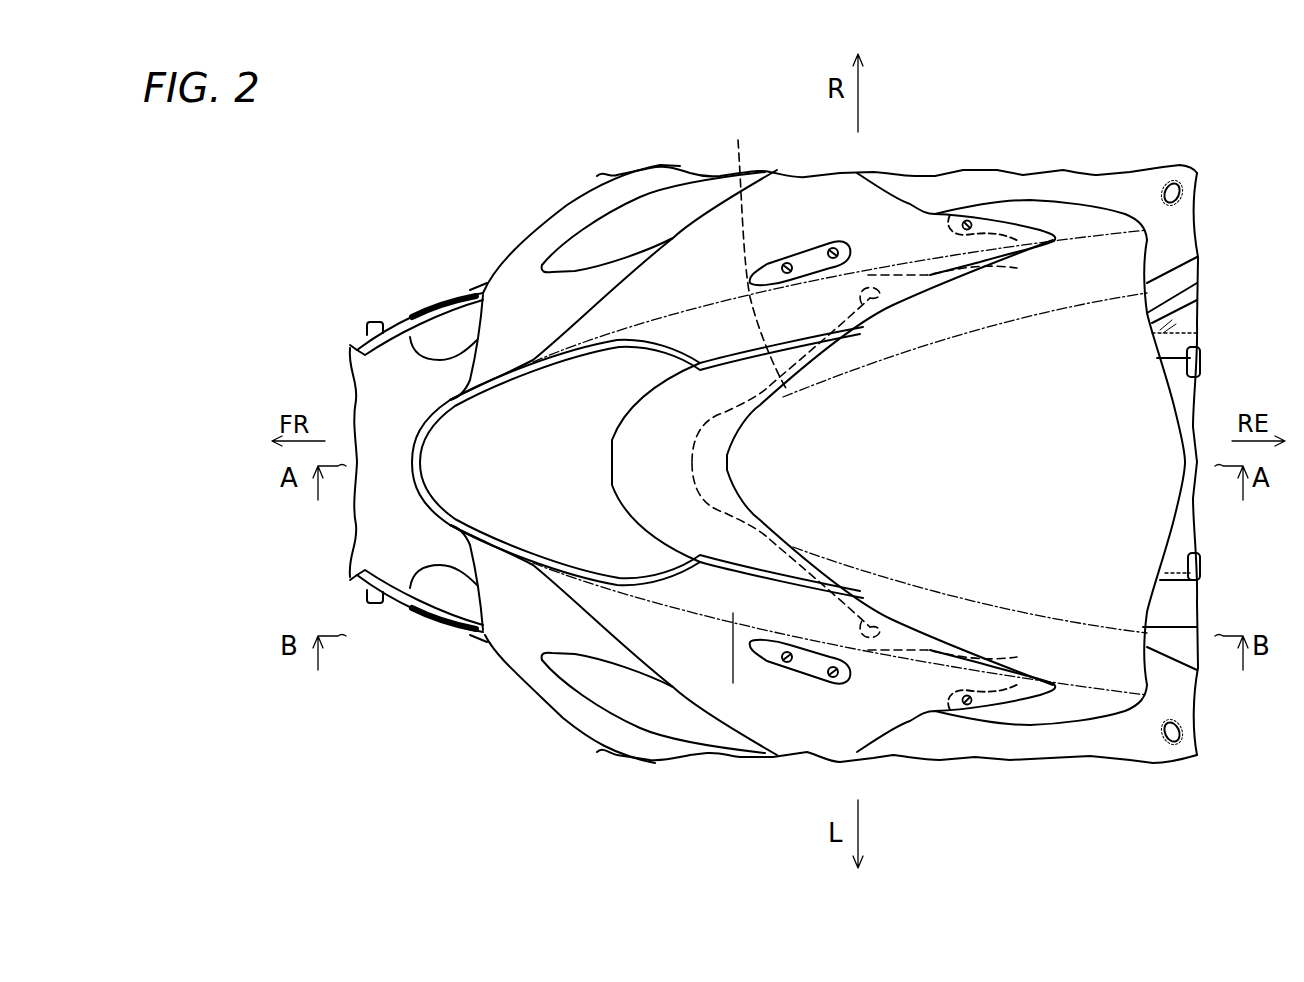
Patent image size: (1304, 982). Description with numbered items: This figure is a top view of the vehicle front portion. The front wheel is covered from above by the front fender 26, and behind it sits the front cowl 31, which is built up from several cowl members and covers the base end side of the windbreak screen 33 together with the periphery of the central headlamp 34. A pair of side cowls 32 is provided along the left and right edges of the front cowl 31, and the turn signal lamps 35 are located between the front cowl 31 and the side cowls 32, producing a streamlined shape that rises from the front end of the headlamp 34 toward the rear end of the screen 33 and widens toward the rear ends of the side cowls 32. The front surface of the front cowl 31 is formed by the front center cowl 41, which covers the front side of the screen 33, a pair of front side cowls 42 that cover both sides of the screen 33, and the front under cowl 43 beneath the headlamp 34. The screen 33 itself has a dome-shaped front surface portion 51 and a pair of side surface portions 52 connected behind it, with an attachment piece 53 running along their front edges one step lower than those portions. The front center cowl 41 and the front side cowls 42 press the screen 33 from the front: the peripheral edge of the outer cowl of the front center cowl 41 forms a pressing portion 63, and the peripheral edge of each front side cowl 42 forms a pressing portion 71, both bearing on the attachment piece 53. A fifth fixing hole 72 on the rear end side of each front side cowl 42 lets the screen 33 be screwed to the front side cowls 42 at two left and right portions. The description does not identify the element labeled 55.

The front fender 26 is at (363, 585).
The front cowl 31 is at (500, 265).
The side cowls 32 is at (965, 207).
The windbreak screen 33 is at (1160, 318).
The central headlamp 34 is at (493, 513).
The turn signal lamps 35 is at (680, 168).
The front center cowl 41 is at (742, 543).
The front side cowls 42 is at (793, 195).
The front under cowl 43 is at (514, 642).
The front surface portion 51 is at (1140, 565).
The side surface portions 52 is at (1065, 205).
The attachment piece 53 is at (738, 140).
The center panel 55 is at (700, 447).
The pressing portion 63 is at (728, 447).
The pressing portion 71 is at (890, 310).
The fifth fixing hole 72 is at (970, 215).